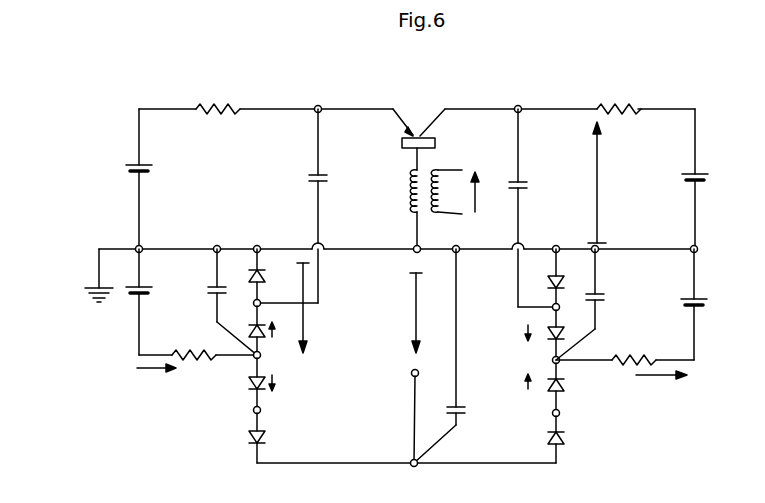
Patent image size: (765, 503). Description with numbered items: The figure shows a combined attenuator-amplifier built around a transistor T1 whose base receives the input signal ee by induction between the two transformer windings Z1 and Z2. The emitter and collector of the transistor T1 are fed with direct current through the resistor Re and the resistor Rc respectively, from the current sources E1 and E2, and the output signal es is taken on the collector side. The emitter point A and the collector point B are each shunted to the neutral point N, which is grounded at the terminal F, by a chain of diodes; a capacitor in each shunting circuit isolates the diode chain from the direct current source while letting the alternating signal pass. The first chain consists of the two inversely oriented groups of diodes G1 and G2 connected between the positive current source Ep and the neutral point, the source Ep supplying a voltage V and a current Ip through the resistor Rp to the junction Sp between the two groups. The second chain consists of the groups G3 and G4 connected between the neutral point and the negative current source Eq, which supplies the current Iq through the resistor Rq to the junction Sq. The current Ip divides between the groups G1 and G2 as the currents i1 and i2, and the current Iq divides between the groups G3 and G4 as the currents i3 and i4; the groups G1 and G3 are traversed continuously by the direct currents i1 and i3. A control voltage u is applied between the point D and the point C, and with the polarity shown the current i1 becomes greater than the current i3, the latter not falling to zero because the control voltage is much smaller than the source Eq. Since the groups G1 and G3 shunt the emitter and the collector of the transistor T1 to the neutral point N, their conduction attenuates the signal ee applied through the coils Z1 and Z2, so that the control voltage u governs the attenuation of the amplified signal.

The emitter resistor Re is at (218, 100).
The emitter point A is at (317, 98).
The collector point B is at (517, 98).
The collector resistor Rc is at (619, 100).
The current source E1 is at (131, 179).
The current source E2 is at (705, 179).
The transistor T1 is at (401, 145).
The transformer winding Z2 is at (408, 187).
The transformer winding Z1 is at (436, 208).
The input signal voltage ee is at (482, 192).
The output signal voltage es is at (601, 182).
The point C is at (456, 239).
The ground terminal F is at (96, 275).
The neutral point N is at (109, 278).
The positive current source Ep is at (149, 302).
The resistor Rp is at (214, 368).
The current Ip is at (156, 377).
The first group of diodes G1 is at (248, 304).
The second group of diodes G2 is at (245, 411).
The current i1 is at (277, 331).
The current i2 is at (277, 384).
The node Sp is at (267, 358).
The voltage V is at (308, 308).
The control voltage u is at (401, 368).
The point D is at (420, 472).
The third group of diodes G3 is at (566, 309).
The fourth group of diodes G4 is at (566, 415).
The current i3 is at (518, 331).
The current i4 is at (518, 384).
The node Sq is at (543, 355).
The resistor Rq is at (625, 351).
The current Iq is at (661, 385).
The negative current source Eq is at (688, 304).